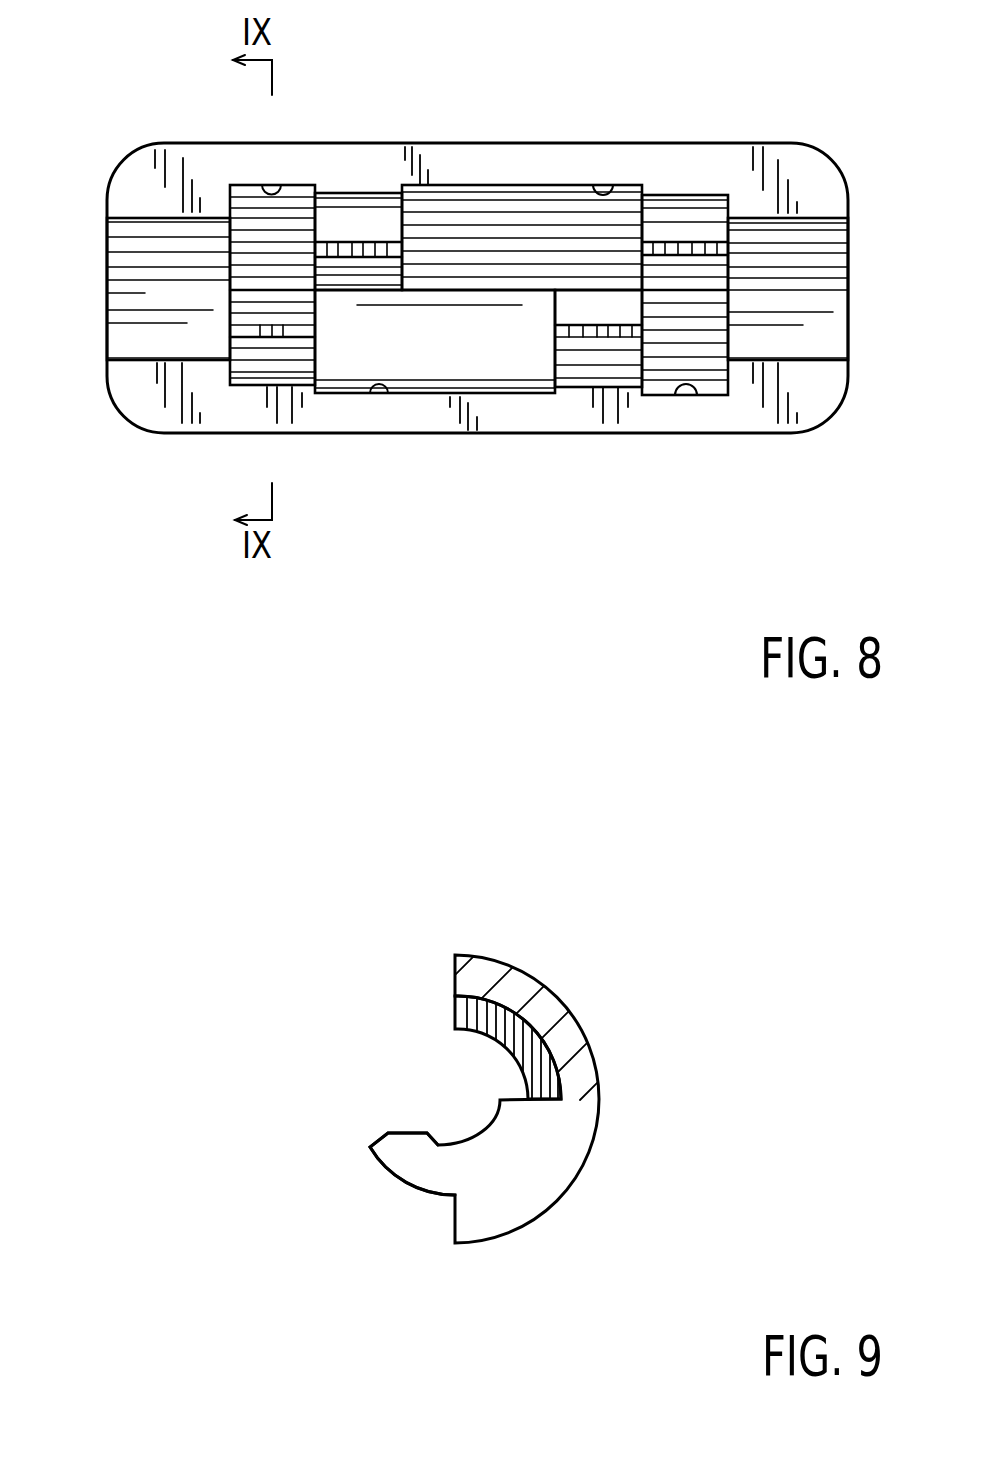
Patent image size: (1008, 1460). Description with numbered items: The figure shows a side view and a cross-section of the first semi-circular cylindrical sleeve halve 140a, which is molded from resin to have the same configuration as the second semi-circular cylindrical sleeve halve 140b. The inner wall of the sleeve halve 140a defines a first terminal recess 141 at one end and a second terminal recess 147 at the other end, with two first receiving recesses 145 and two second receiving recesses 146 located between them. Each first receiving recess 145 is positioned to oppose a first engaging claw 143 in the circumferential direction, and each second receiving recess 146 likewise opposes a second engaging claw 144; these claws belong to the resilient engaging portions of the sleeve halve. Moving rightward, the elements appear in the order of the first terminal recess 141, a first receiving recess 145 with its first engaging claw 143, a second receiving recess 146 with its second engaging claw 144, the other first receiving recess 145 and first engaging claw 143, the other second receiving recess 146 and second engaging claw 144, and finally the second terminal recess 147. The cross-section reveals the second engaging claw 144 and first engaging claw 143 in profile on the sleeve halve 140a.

In FIG. 8, the first semi-circular cylindrical sleeve halve 140a is at (477, 225).
In FIG. 9, the first semi-circular cylindrical sleeve halve 140a is at (669, 786).
In FIG. 8, the second semi-circular cylindrical sleeve halve 140b is at (493, 160).
In FIG. 9, the second semi-circular cylindrical sleeve halve 140b is at (588, 1163).
In FIG. 8, the first terminal recess 141 is at (140, 277).
In FIG. 8, the first engaging claw 143 is at (265, 365).
In FIG. 9, the first engaging claw 143 is at (395, 1162).
In FIG. 8, the second engaging claw 144 is at (352, 213).
In FIG. 9, the second engaging claw 144 is at (507, 1045).
In FIG. 8, the first receiving recess 145 is at (270, 186).
In FIG. 8, the second receiving recess 146 is at (378, 394).
In FIG. 8, the second terminal recess 147 is at (800, 335).